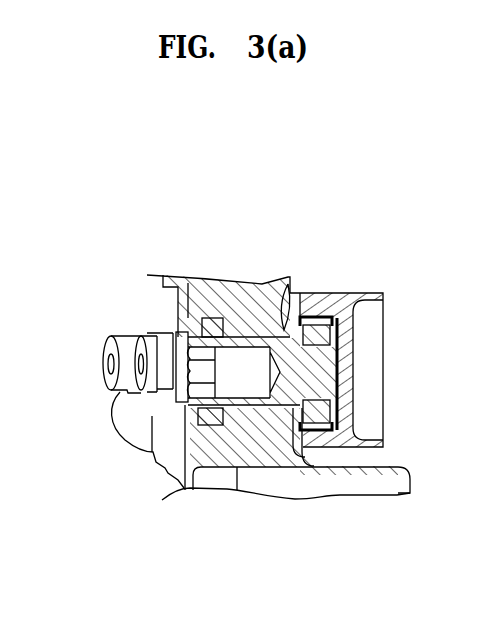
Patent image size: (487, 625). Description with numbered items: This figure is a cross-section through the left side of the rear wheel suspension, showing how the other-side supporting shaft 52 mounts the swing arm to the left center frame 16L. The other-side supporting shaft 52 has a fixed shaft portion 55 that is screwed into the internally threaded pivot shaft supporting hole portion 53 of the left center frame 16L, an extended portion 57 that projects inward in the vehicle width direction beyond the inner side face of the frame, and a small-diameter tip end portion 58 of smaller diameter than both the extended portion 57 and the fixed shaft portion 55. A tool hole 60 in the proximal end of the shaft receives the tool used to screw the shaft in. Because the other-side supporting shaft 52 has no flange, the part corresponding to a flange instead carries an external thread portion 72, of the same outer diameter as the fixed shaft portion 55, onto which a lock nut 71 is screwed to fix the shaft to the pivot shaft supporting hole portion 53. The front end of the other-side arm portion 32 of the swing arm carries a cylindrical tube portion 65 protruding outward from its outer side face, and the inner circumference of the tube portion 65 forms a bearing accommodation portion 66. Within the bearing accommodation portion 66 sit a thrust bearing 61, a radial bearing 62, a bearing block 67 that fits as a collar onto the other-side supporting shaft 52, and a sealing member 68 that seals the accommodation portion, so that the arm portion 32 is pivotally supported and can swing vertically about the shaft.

The left center frame 16L is at (243, 280).
The other-side arm portion 32 is at (343, 292).
The other-side supporting shaft 52 is at (185, 397).
The pivot shaft supporting hole portion 53 is at (267, 405).
The fixed shaft portion 55 is at (240, 452).
The extended portion 57 is at (307, 408).
The small-diameter tip end portion 58 is at (340, 372).
The tool hole 60 is at (186, 352).
The thrust bearing 61 is at (357, 298).
The radial bearing 62 is at (312, 317).
The tube portion 65 is at (311, 317).
The bearing accommodation portion 66 is at (317, 432).
The bearing block 67 is at (323, 300).
The sealing member 68 is at (271, 283).
The lock nut 71 is at (210, 293).
The external thread portion 72 is at (191, 278).